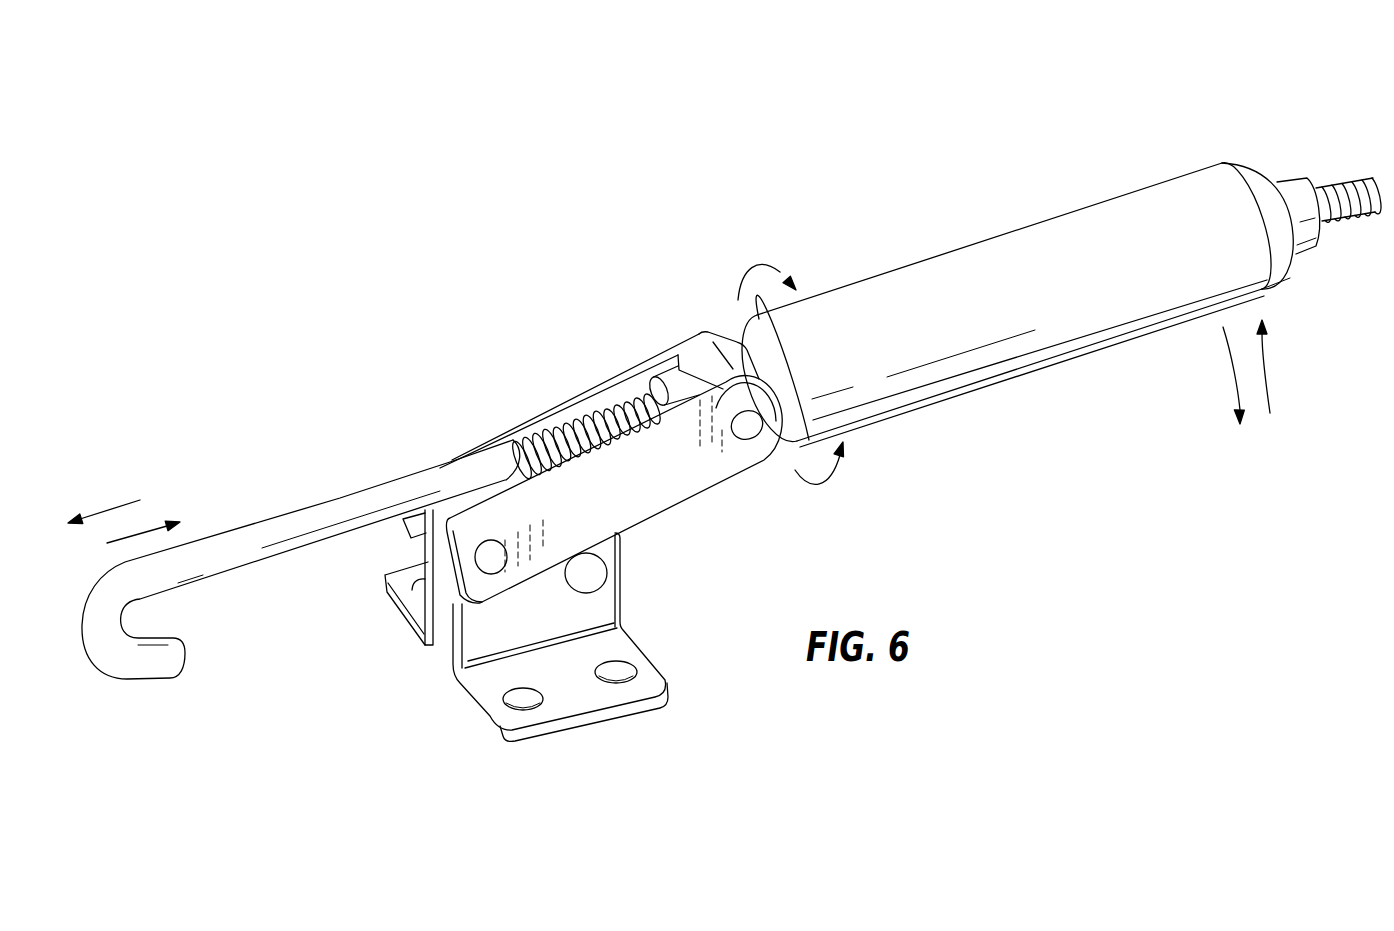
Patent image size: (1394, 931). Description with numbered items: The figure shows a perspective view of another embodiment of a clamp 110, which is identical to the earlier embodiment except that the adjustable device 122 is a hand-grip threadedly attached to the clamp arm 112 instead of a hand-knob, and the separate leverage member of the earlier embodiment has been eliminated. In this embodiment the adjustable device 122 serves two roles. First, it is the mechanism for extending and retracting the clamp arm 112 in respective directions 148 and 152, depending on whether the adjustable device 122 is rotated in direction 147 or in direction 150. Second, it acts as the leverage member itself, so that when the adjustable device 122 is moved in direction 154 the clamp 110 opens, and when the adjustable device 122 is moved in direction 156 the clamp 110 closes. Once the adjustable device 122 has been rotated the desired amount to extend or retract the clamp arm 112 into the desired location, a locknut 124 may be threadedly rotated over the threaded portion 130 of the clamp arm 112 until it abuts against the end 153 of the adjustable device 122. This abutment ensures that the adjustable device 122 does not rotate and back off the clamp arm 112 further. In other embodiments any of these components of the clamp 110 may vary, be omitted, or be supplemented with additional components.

The clamp 110 is at (391, 347).
The clamp arm 112 is at (323, 506).
The adjustable device 122 is at (1043, 340).
The locknut 124 is at (1295, 185).
The threaded portion 130 is at (1328, 182).
The direction 147 is at (755, 263).
The direction 148 is at (112, 508).
The direction 150 is at (826, 489).
The direction 152 is at (148, 527).
The end 153 is at (1277, 177).
The direction 154 is at (1272, 378).
The direction 156 is at (1232, 378).